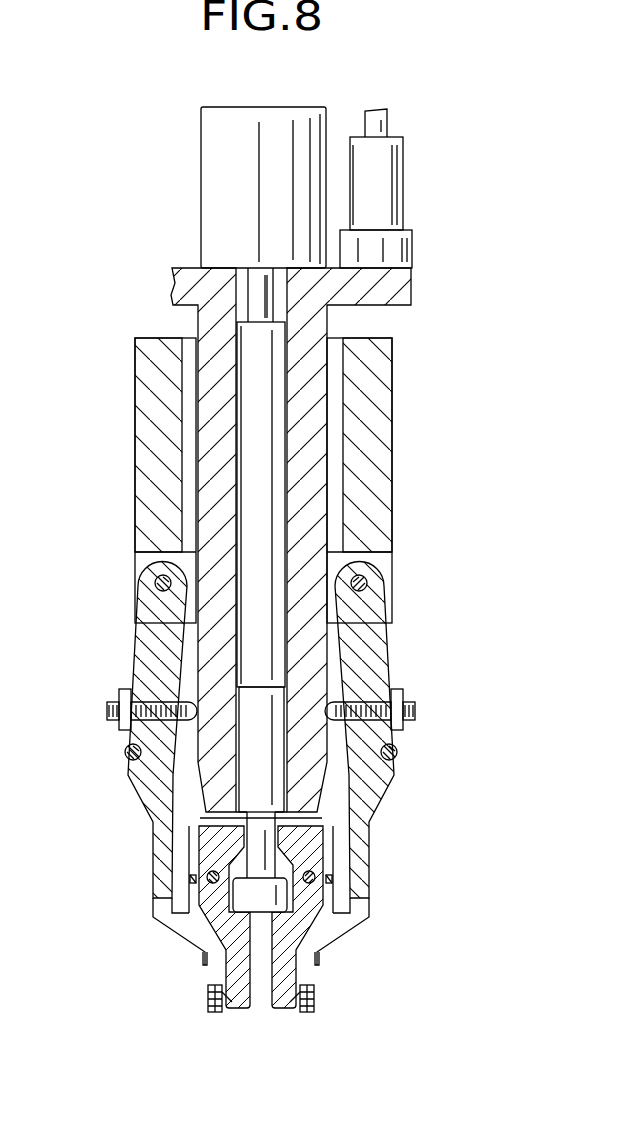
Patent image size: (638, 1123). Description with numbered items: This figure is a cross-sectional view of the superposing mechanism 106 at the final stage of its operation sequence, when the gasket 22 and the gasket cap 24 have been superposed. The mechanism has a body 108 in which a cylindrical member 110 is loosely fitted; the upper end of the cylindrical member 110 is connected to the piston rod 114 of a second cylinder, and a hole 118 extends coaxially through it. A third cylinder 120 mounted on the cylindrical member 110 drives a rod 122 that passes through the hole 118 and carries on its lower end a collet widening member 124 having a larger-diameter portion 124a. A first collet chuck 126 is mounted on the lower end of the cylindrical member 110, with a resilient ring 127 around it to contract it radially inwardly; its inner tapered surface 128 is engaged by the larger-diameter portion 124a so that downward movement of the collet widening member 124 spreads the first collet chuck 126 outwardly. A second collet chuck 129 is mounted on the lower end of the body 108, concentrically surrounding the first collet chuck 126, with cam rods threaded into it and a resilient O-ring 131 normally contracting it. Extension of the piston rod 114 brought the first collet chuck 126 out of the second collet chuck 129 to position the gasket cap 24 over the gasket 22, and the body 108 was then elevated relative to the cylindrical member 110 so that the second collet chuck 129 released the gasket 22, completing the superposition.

The superposing mechanism 106 is at (449, 197).
The body 108 is at (373, 439).
The cylindrical member 110 is at (317, 373).
The piston rod 114 is at (386, 124).
The hole 118 is at (235, 287).
The third cylinder 120 is at (208, 167).
The rod 122 is at (255, 417).
The collet widening member 124 is at (255, 835).
The larger-diameter portion 124a is at (250, 898).
The first collet chuck 126 is at (317, 852).
The resilient ring 127 is at (332, 879).
The inner tapered surface 128 is at (200, 930).
The second collet chuck 129 is at (378, 652).
The resilient O-ring 131 is at (397, 763).
The gasket 22 is at (208, 996).
The gasket cap 24 is at (298, 986).